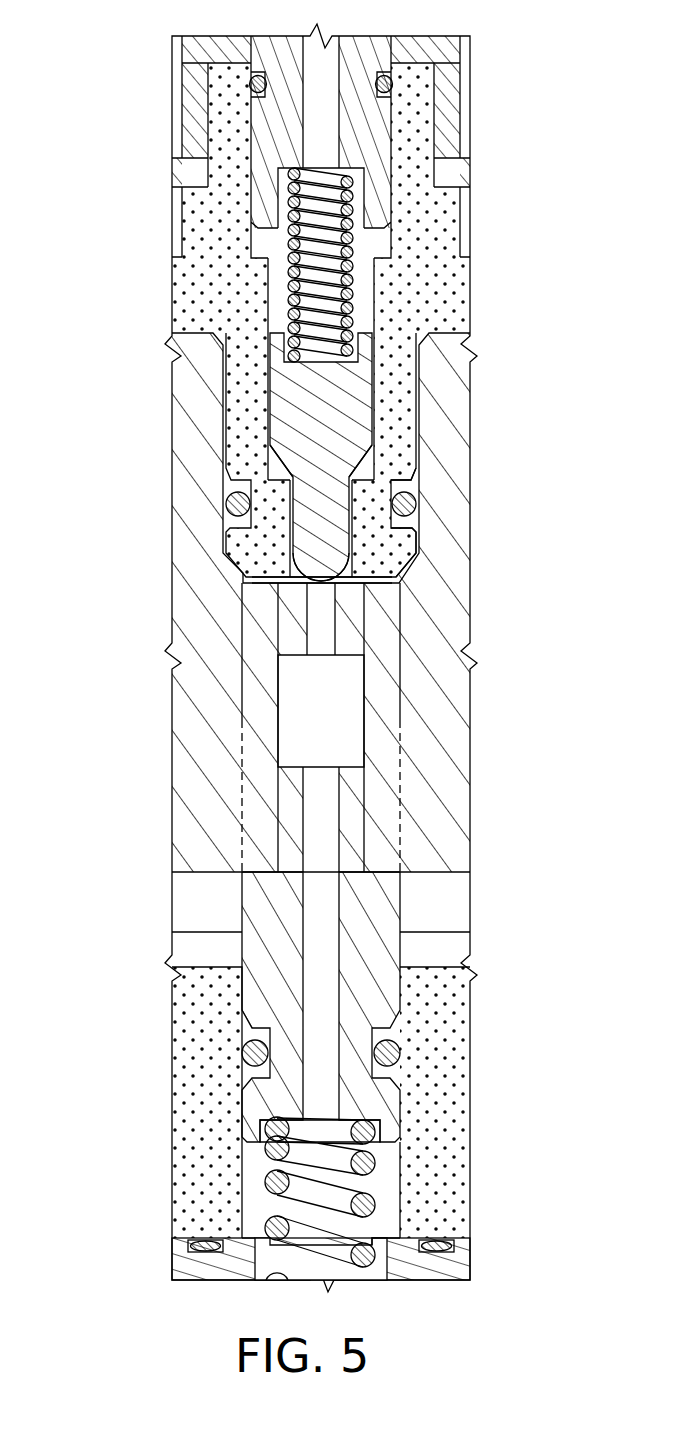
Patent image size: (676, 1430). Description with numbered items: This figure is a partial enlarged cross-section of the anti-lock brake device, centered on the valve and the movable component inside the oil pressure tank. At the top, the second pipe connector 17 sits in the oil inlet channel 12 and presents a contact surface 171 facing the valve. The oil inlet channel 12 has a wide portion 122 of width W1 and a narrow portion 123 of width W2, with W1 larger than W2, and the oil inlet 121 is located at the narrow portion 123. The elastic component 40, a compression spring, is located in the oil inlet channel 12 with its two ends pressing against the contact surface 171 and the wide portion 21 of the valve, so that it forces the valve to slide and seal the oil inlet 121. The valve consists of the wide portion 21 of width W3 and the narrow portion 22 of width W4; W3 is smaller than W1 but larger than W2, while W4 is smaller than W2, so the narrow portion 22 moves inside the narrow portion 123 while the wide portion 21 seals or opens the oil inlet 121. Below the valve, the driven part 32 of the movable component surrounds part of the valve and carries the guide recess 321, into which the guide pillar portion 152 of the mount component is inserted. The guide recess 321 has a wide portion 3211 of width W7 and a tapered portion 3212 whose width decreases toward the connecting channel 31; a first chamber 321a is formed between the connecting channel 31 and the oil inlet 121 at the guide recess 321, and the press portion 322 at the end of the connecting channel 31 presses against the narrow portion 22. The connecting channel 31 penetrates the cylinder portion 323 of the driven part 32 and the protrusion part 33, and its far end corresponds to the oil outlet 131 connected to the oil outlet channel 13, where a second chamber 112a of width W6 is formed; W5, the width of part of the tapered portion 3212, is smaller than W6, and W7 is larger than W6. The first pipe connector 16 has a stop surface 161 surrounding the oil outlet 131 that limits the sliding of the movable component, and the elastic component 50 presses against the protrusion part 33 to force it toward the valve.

The second pipe connector 17 is at (286, 57).
The oil inlet channel 12 is at (313, 130).
The contact surface 171 is at (284, 176).
The wide portion 122 is at (280, 279).
The elastic component 40 is at (402, 238).
The wide portion 21 is at (320, 413).
The guide pillar portion 152 is at (288, 476).
The oil inlet 121 is at (262, 470).
The wide portion 3211 is at (416, 480).
The tapered portion 3212 is at (402, 553).
The guide recess 321 is at (553, 462).
The first chamber 321a is at (351, 588).
The narrow portion 123 is at (285, 530).
The narrow portion 22 is at (323, 556).
The press portion 322 is at (320, 626).
The driven part 32 is at (474, 637).
The connecting channel 31 is at (325, 690).
The cylinder portion 323 is at (455, 792).
The protrusion part 33 is at (373, 998).
The second chamber 112a is at (253, 1155).
The elastic component 50 is at (265, 1184).
The stop surface 161 is at (247, 1234).
The oil outlet 131 is at (381, 1234).
The first pipe connector 16 is at (455, 1262).
The oil outlet channel 13 is at (334, 1269).
The width of the wide portion of the oil inlet channel W1 is at (354, 303).
The width of the narrow portion of the oil inlet channel W2 is at (349, 501).
The width of the wide portion of the valve W3 is at (363, 380).
The width of the narrow portion of the valve W4 is at (349, 543).
The width of a part of the tapered portion W5 is at (400, 719).
The width of the second chamber W6 is at (400, 1166).
The width of the wide portion of the guide recess W7 is at (224, 429).